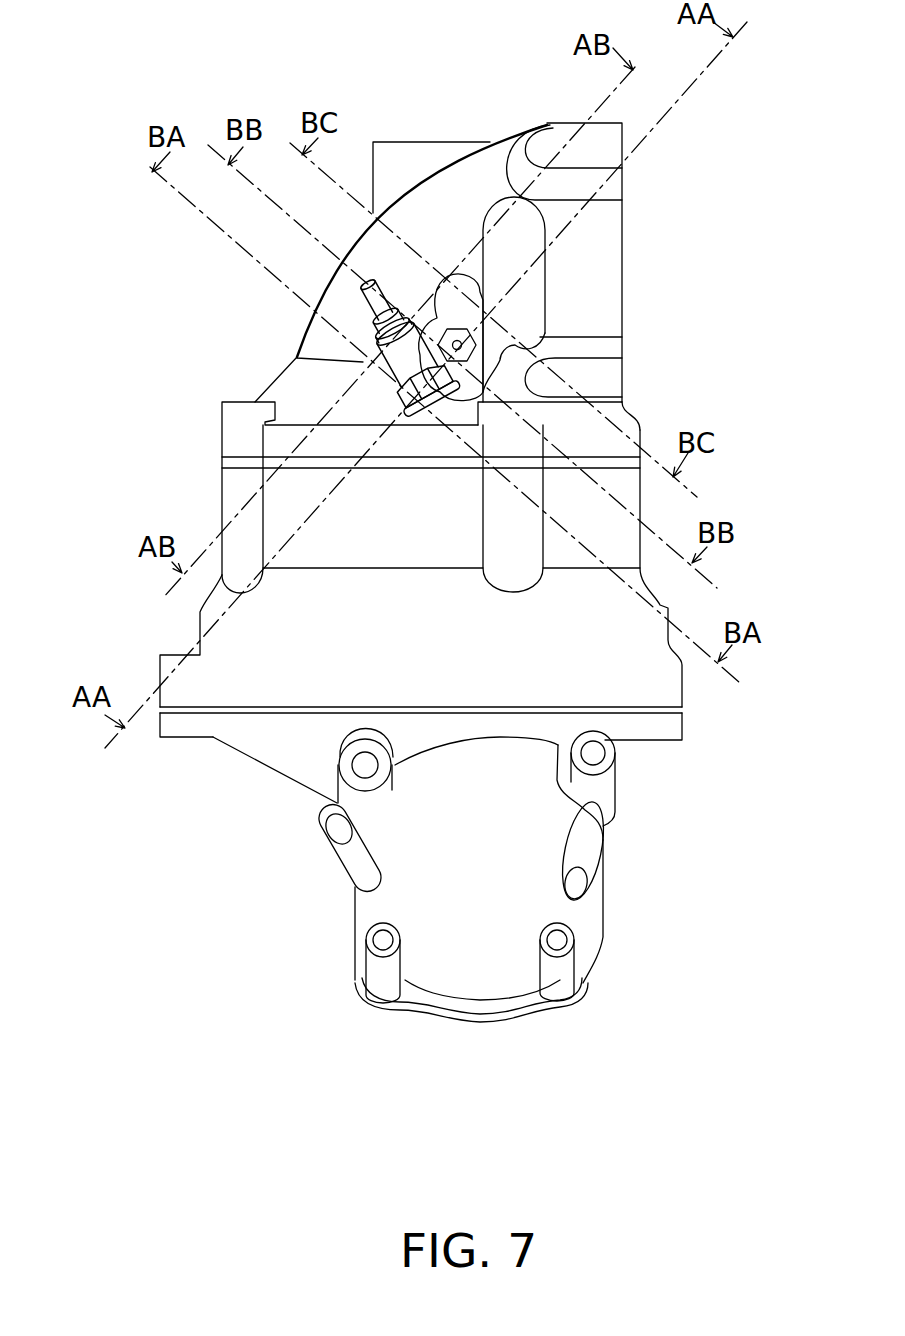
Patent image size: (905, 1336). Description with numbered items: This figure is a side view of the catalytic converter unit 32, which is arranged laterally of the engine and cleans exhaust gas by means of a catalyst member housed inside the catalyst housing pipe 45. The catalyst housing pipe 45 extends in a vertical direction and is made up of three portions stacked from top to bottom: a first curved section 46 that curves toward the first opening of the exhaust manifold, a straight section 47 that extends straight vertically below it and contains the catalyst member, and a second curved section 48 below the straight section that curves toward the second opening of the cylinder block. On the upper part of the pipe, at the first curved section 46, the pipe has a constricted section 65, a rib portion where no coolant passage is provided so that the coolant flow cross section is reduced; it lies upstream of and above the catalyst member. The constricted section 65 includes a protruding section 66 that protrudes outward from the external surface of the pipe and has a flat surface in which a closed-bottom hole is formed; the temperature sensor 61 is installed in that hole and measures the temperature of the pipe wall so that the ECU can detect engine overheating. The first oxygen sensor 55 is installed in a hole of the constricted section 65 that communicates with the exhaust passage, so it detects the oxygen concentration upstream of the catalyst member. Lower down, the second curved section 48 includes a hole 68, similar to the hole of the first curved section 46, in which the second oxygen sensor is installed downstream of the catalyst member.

The catalytic converter unit 32 is at (148, 308).
The catalyst housing pipe 45 is at (297, 388).
The first curved section 46 is at (462, 210).
The straight section 47 is at (347, 507).
The second curved section 48 is at (480, 947).
The first oxygen sensor 55 is at (350, 296).
The temperature sensor 61 is at (470, 343).
The constricted section 65 is at (457, 406).
The protruding section 66 is at (453, 308).
The hole 68 is at (577, 883).